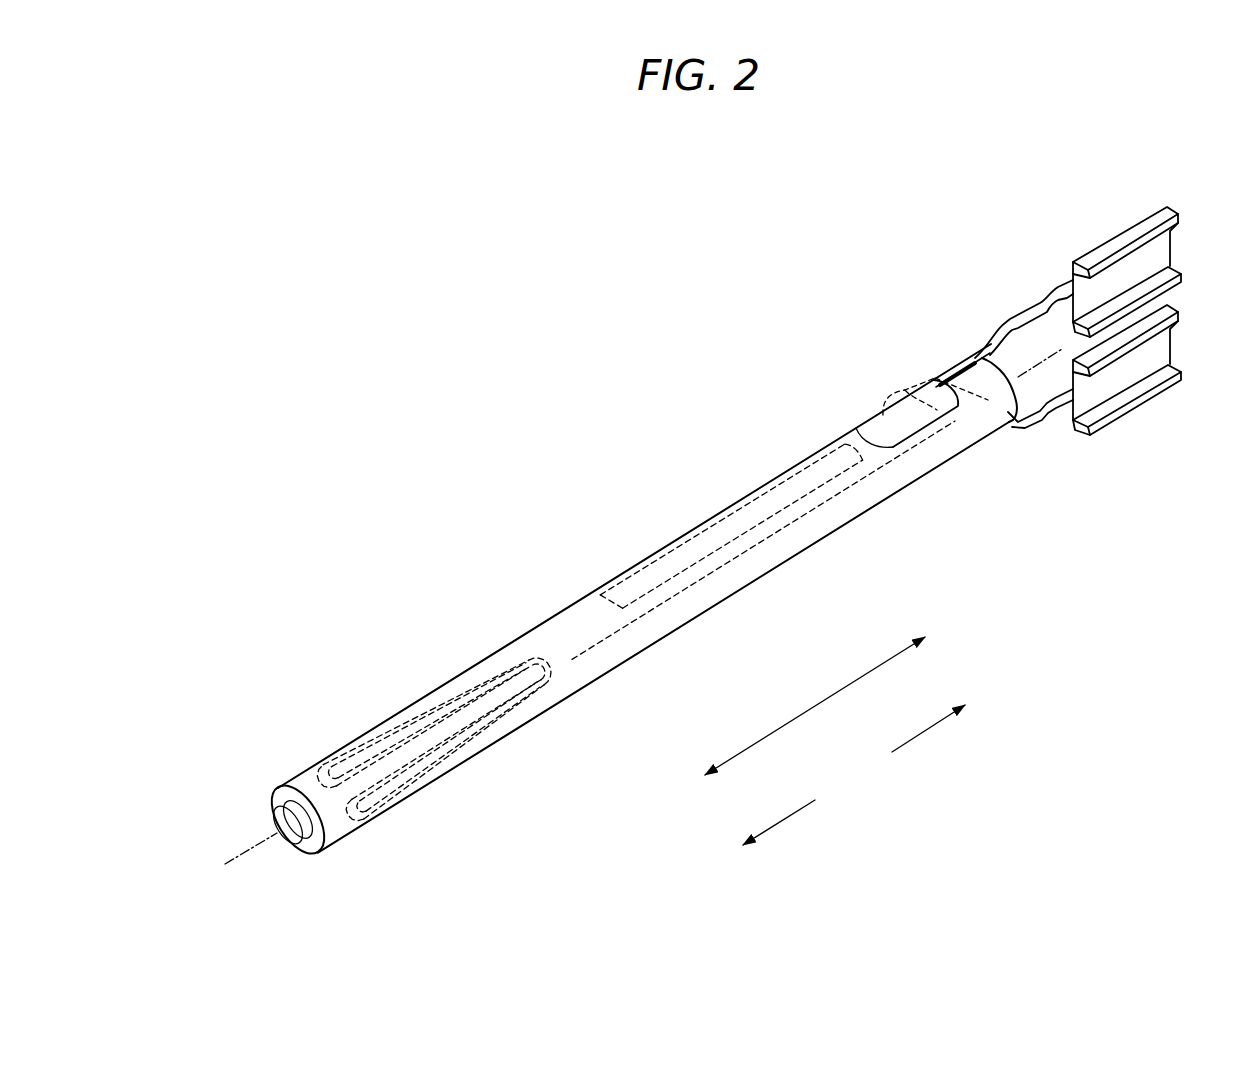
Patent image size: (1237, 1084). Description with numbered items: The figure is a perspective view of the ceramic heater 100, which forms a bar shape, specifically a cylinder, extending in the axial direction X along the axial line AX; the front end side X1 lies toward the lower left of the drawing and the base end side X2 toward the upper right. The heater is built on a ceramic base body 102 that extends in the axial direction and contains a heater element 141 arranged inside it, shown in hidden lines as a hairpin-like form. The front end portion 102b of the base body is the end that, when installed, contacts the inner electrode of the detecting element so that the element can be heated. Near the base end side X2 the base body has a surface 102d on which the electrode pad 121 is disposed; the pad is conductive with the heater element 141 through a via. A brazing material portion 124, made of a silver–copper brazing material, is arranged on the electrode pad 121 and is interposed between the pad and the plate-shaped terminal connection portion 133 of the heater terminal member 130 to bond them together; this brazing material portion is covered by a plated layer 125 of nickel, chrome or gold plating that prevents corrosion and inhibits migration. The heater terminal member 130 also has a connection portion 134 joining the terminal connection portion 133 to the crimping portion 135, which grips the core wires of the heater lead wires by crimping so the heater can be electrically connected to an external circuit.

The ceramic heater 100 is at (670, 420).
The ceramic base body 102 is at (588, 617).
The front end portion 102b is at (338, 822).
The surface 102d is at (874, 447).
The electrode pad 121 is at (847, 434).
The brazing material portion 124 is at (892, 408).
The plated layer 125 is at (943, 415).
The heater terminal member 130 is at (1022, 148).
The terminal connection portion 133 is at (905, 400).
The connection portion 134 is at (1040, 395).
The crimping portion 135 is at (1128, 367).
The heater element 141 is at (510, 654).
The axial line AX is at (258, 840).
The axial direction X is at (817, 703).
The front end side X1 is at (802, 803).
The base end side X2 is at (905, 743).